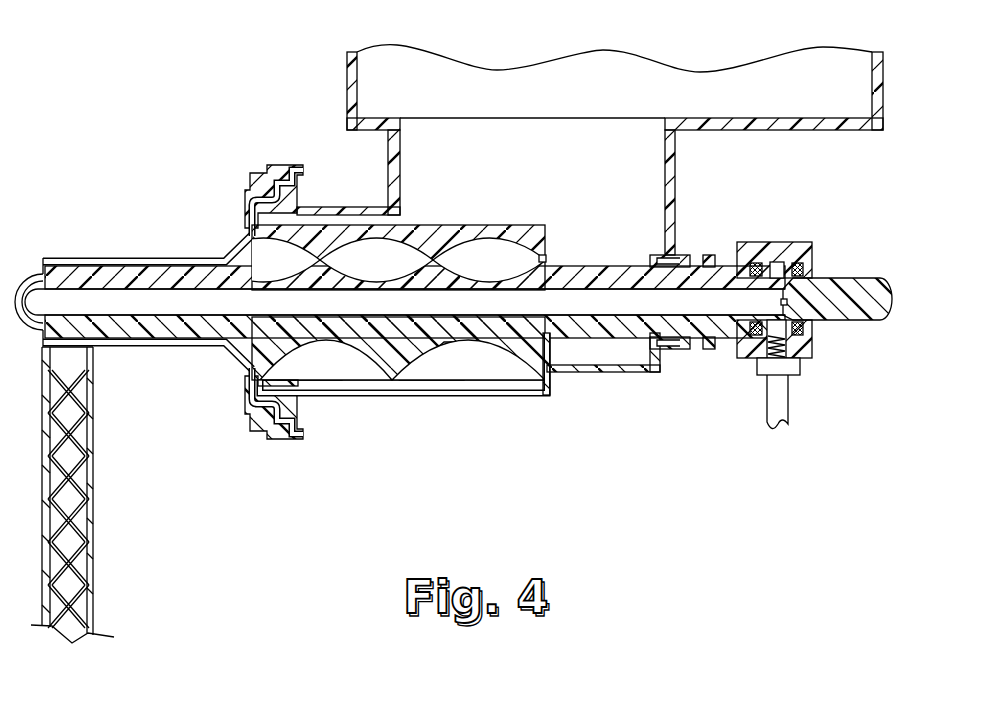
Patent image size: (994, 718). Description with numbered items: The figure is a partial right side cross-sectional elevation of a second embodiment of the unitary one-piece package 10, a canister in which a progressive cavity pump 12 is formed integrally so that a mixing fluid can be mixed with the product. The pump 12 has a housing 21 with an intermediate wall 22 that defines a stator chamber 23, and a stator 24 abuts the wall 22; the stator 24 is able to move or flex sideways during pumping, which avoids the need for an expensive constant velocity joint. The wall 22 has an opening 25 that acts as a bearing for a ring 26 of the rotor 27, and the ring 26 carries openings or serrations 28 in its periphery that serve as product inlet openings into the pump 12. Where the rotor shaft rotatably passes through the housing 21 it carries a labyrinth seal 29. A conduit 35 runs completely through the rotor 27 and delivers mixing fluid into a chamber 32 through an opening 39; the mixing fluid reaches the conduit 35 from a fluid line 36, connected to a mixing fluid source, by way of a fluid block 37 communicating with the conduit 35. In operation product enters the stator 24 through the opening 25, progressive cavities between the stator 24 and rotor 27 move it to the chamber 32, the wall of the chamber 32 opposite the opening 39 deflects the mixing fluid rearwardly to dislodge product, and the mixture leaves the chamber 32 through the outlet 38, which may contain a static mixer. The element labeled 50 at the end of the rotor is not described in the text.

The unitary one-piece package 10 is at (93, 175).
The pump 12 is at (436, 414).
The housing 21 is at (397, 398).
The intermediate wall 22 is at (549, 356).
The stator chamber 23 is at (347, 383).
The stator 24 is at (452, 378).
The opening 25 is at (547, 263).
The ring 26 is at (543, 257).
The rotor 27 is at (255, 264).
The openings or serrations 28 is at (548, 339).
The labyrinth seal 29 is at (647, 358).
The chamber 32 is at (70, 274).
The conduit 35 is at (364, 313).
The fluid line 36 is at (789, 414).
The fluid block 37 is at (776, 243).
The outlet 38 is at (95, 512).
The opening 39 is at (36, 305).
The shaft coupling end 50 is at (843, 278).